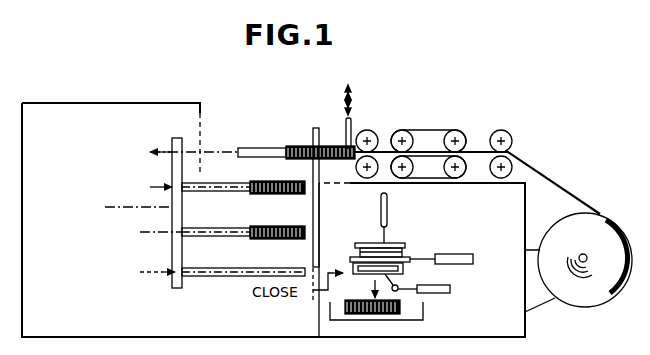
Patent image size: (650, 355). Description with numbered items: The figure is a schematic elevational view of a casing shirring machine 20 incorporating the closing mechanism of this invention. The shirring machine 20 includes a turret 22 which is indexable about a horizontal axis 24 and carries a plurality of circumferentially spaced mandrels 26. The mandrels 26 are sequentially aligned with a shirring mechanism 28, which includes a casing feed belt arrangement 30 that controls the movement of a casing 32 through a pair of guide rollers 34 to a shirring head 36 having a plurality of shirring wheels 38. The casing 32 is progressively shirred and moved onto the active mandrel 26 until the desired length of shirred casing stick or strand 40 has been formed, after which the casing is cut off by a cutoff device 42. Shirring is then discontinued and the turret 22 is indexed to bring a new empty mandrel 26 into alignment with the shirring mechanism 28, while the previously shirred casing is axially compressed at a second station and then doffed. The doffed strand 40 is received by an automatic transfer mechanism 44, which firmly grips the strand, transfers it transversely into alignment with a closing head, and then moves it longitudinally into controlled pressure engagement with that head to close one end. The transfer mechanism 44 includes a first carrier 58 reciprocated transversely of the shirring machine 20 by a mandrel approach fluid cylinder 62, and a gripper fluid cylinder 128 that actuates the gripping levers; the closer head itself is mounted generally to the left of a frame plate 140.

The shirring machine 20 is at (513, 115).
The turret 22 is at (176, 138).
The horizontal axis 24 is at (100, 206).
The mandrels 26 is at (244, 146).
The shirring mechanism 28 is at (391, 130).
The casing feed belt arrangement 30 is at (432, 128).
The casing 32 is at (550, 180).
The guide rollers 34 is at (511, 136).
The shirring head 36 is at (357, 128).
The shirring wheels 38 is at (330, 197).
The shirred casing stick or strand 40 is at (288, 146).
The cutoff device 42 is at (346, 118).
The transfer mechanism 44 is at (413, 250).
The first carrier 58 is at (455, 264).
The mandrel approach fluid cylinder 62 is at (388, 200).
The gripper fluid cylinder 128 is at (440, 294).
The frame plate 140 is at (321, 238).